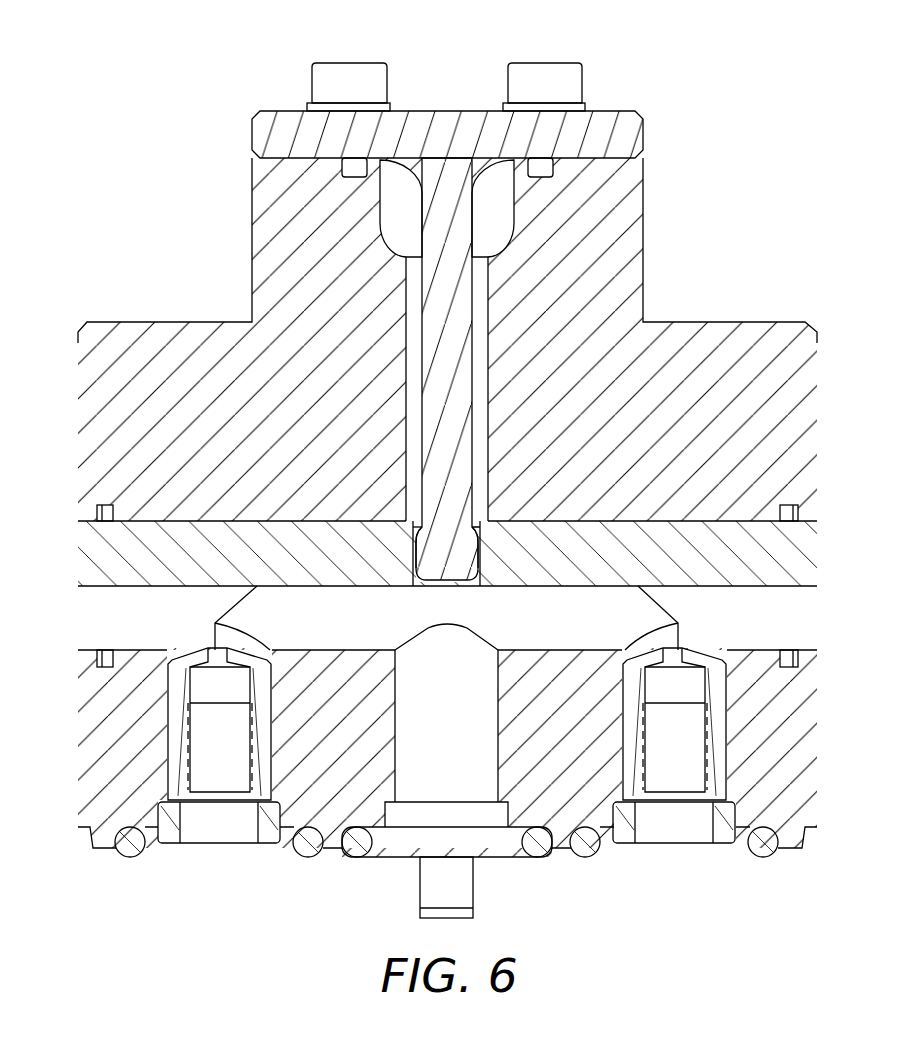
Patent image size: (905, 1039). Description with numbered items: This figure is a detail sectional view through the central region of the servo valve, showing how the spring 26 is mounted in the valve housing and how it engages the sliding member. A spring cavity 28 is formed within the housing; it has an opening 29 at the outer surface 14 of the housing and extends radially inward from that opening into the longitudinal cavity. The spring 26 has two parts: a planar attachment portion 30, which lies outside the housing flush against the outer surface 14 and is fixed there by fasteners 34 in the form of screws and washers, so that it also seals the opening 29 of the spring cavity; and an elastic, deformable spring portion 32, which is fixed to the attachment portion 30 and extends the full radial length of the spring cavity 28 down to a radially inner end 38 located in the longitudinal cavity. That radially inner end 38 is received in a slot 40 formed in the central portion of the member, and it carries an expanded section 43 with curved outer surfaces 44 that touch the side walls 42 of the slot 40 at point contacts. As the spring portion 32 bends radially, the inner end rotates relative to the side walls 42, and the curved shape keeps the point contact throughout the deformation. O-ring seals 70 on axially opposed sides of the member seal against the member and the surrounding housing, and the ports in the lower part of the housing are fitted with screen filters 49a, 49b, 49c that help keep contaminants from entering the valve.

The outer surface 14 is at (252, 205).
The spring 26 is at (722, 75).
The spring cavity 28 is at (490, 286).
The opening 29 is at (383, 160).
The attachment portion 30 is at (262, 128).
The spring portion 32 is at (458, 388).
The fasteners 34 is at (345, 75).
The radially inner end 38 is at (450, 575).
The slot 40 is at (396, 594).
The side walls 42 is at (482, 530).
The expanded section 43 is at (430, 548).
The curved outer surfaces 44 is at (418, 526).
The screen filter 49a is at (215, 850).
The screen filter 49b is at (396, 850).
The screen filter 49c is at (672, 850).
The O-ring seals 70 is at (100, 512).